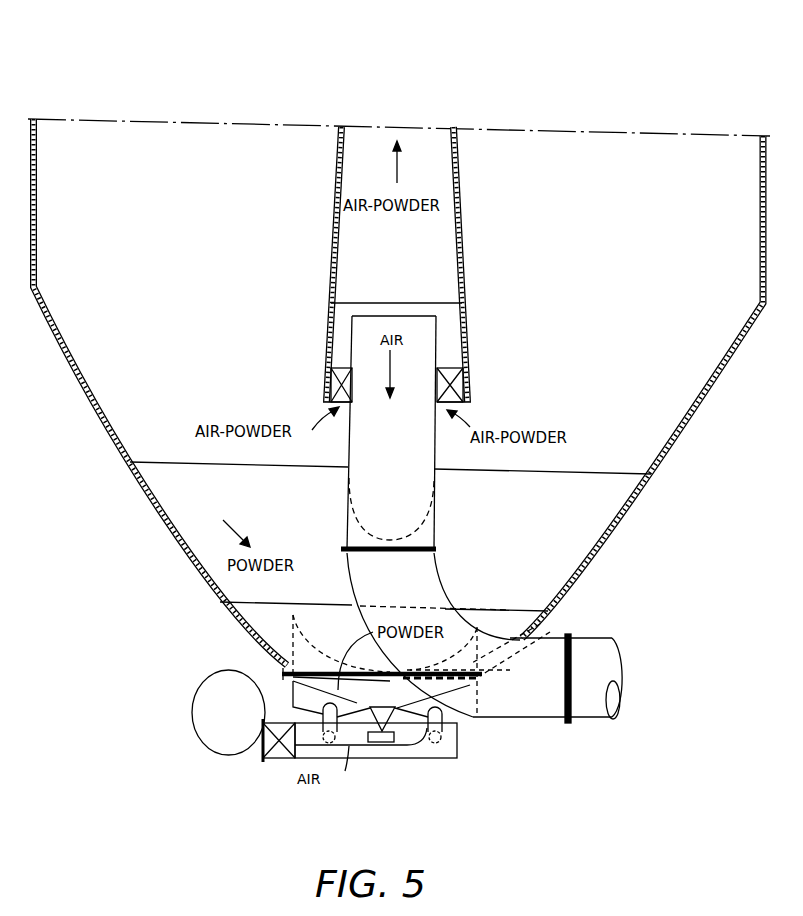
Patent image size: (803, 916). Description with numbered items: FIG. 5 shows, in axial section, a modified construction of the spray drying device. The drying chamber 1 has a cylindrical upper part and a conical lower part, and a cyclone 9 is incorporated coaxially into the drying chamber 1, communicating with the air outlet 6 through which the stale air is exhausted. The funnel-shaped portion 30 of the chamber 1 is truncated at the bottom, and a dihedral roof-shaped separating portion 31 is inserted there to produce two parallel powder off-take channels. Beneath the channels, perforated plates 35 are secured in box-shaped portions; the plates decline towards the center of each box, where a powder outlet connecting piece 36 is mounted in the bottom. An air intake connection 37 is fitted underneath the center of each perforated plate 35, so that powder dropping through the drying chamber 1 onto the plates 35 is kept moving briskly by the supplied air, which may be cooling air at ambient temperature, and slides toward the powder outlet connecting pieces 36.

The drying chamber 1 is at (399, 392).
The cyclone 9 is at (446, 236).
The funnel-shaped portion 30 is at (701, 411).
The separating portion 31 is at (622, 453).
The perforated plates 35 is at (414, 700).
The powder outlet connecting piece 36 is at (387, 752).
The air intake connection 37 is at (327, 706).
The air outlet 6 is at (399, 108).